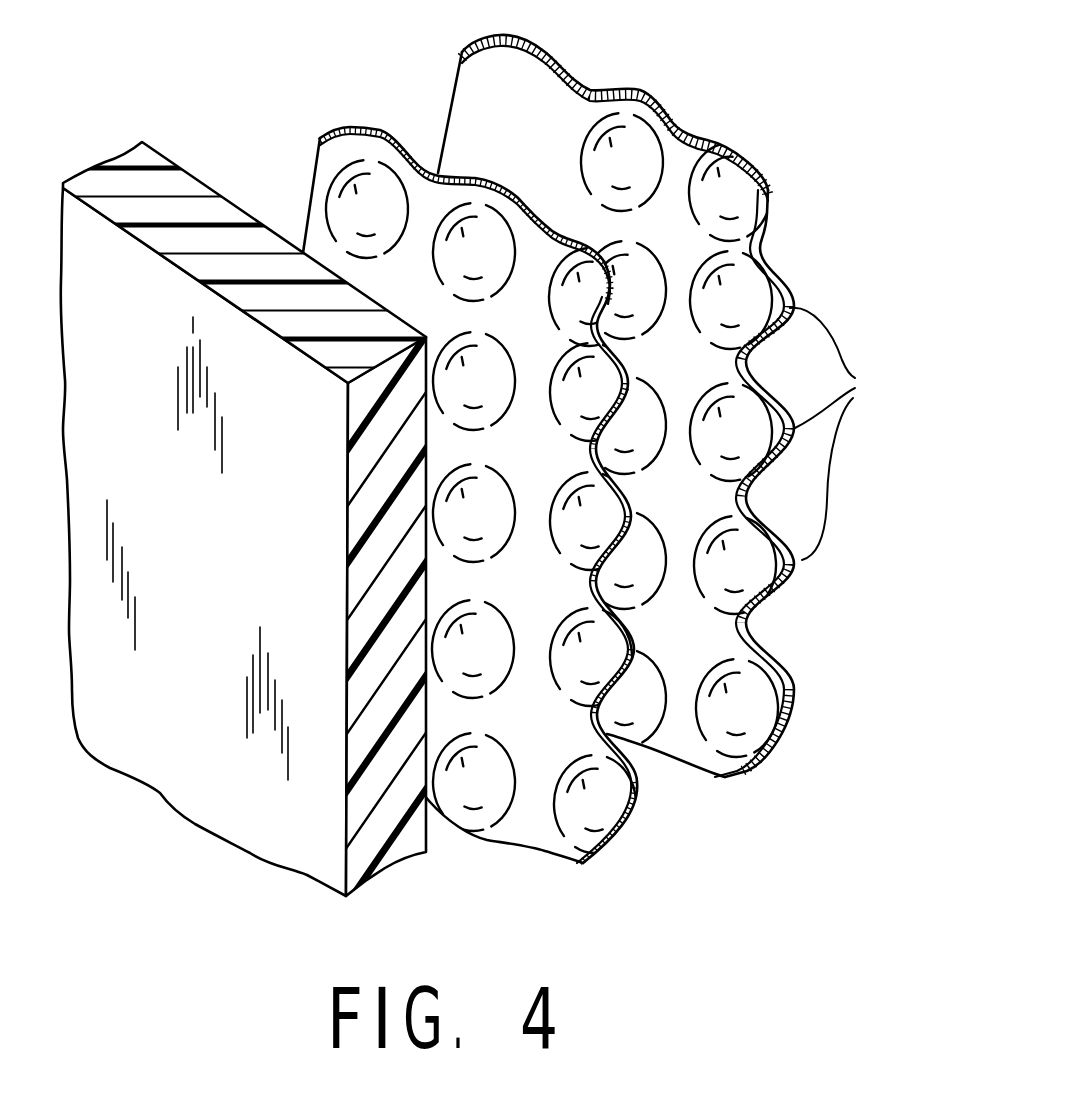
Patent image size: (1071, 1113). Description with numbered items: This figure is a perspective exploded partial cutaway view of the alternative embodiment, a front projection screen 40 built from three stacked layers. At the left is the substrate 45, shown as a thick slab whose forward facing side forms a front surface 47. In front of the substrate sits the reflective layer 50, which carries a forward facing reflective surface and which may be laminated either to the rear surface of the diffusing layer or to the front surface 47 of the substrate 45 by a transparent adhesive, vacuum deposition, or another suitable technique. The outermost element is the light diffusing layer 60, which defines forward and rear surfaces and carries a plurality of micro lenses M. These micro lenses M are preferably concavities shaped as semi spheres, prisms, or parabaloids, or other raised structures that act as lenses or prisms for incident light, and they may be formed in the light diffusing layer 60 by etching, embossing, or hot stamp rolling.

The front projection screen 40 is at (502, 483).
The substrate 45 is at (240, 494).
The front surface 47 is at (238, 195).
The reflective layer 50 is at (637, 812).
The light diffusing layer 60 is at (783, 713).
The micro lenses M is at (849, 434).